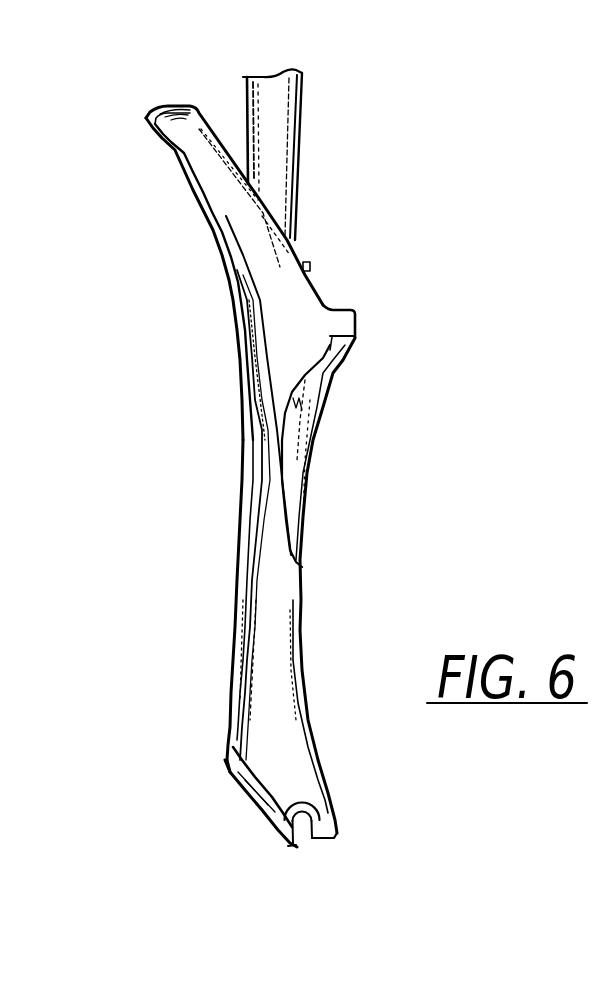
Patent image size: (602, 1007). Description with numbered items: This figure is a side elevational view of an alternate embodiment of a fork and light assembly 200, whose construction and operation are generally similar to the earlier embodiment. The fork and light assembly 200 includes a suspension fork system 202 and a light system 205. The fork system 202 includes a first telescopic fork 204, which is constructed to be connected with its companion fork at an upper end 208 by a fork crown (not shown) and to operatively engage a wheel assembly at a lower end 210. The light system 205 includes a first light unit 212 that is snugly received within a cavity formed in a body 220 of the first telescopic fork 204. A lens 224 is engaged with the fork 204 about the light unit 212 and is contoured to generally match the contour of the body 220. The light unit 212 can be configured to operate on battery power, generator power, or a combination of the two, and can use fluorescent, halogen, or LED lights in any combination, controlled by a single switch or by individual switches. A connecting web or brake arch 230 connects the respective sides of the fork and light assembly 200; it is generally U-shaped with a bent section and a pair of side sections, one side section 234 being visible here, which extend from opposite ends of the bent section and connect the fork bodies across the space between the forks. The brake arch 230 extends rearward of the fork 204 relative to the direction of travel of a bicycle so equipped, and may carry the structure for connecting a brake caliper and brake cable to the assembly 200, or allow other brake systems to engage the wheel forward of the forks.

The fork and light assembly 200 is at (430, 143).
The suspension fork system 202 is at (139, 130).
The first telescopic fork 204 is at (288, 203).
The light system 205 is at (364, 419).
The upper end 208 is at (430, 92).
The lower end 210 is at (344, 835).
The first light unit 212 is at (320, 388).
The body 220 is at (253, 628).
The lens 224 is at (279, 358).
The brake arch 230 is at (198, 53).
The side section 234 is at (212, 190).